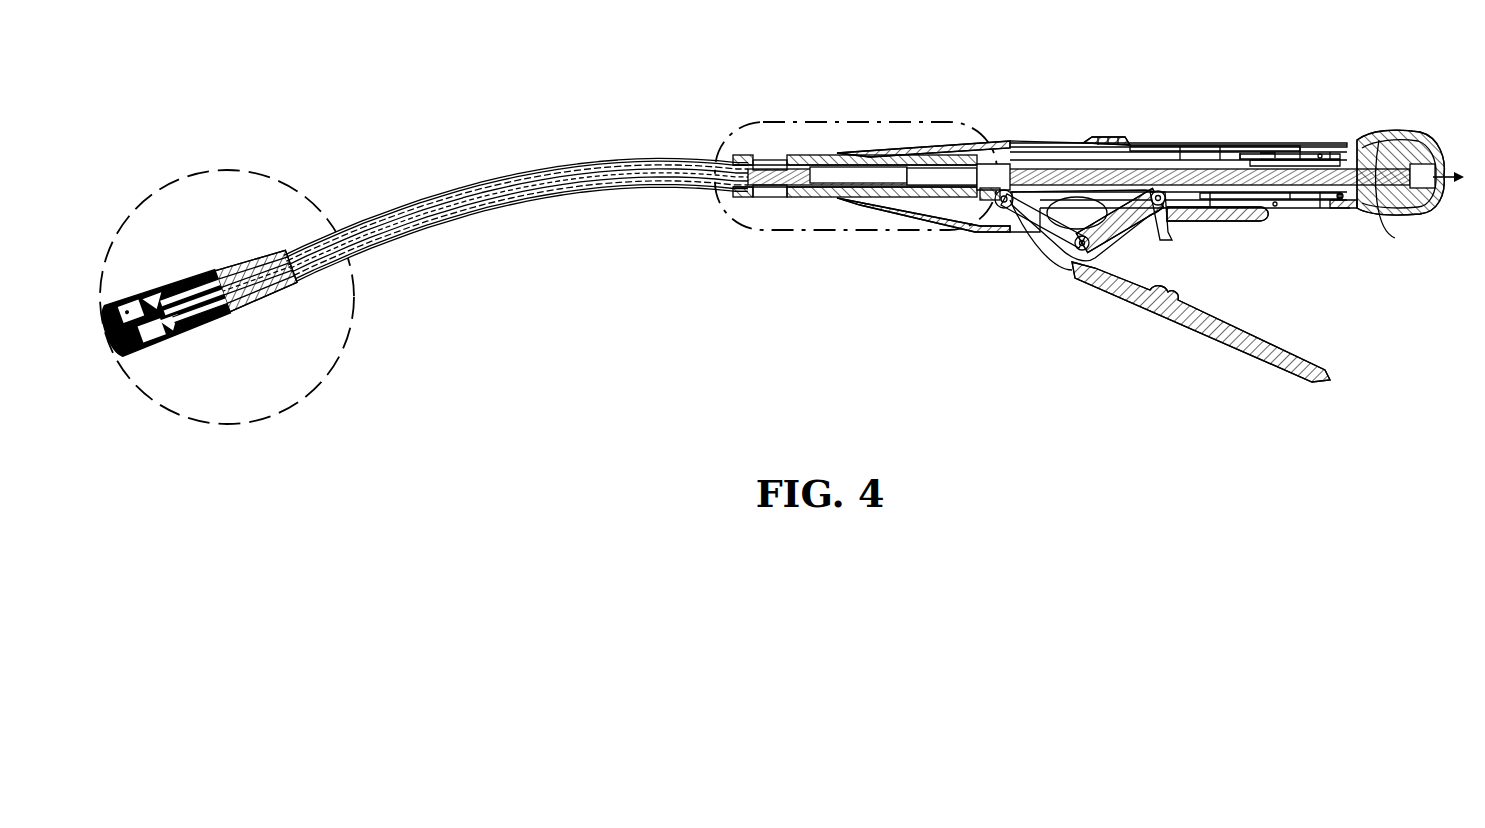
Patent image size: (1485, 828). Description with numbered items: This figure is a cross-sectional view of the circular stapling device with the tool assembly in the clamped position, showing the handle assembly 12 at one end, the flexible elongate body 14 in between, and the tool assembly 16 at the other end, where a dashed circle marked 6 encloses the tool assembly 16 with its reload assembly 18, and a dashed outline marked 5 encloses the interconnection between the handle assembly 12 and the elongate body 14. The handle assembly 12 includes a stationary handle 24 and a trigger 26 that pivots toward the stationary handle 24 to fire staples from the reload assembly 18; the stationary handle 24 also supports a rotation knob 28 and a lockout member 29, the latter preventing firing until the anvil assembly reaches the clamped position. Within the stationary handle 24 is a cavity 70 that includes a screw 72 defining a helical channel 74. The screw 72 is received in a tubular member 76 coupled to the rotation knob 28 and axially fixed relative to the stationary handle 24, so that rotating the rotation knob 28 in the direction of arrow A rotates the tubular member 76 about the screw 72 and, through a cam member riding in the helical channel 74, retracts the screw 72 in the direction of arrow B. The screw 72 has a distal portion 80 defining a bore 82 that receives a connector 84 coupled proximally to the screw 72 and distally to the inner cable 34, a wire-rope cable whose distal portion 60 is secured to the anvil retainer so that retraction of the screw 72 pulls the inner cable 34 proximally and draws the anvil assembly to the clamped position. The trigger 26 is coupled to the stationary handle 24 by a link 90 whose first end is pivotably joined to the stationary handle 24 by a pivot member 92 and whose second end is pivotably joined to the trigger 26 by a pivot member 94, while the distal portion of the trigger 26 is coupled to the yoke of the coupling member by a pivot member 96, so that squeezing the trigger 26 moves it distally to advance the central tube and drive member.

The detail region of FIG. 5 is at (862, 122).
The detail region of FIG. 6 is at (227, 170).
The handle assembly 12 is at (1097, 225).
The elongate body 14 is at (474, 190).
The tool assembly 16 is at (165, 314).
The reload assembly 18 is at (170, 352).
The stationary handle 24 is at (1325, 146).
The trigger 26 is at (1225, 352).
The rotation knob 28 is at (1426, 156).
The lockout member 29 is at (1224, 224).
The inner cable 34 is at (1042, 185).
The distal portion of inner cable 60 is at (312, 243).
The cavity 70 is at (1280, 160).
The screw 72 is at (1294, 205).
The helical channel 74 is at (1343, 208).
The tubular member 76 is at (1257, 154).
The distal portion of screw 80 is at (1176, 150).
The bore 82 is at (1163, 208).
The connector 84 is at (1110, 144).
The link 90 is at (1098, 250).
The pivot member 92 is at (1148, 236).
The pivot member 94 is at (1082, 250).
The pivot member 96 is at (990, 210).
The arrow A is at (1380, 140).
The arrow B is at (1455, 187).